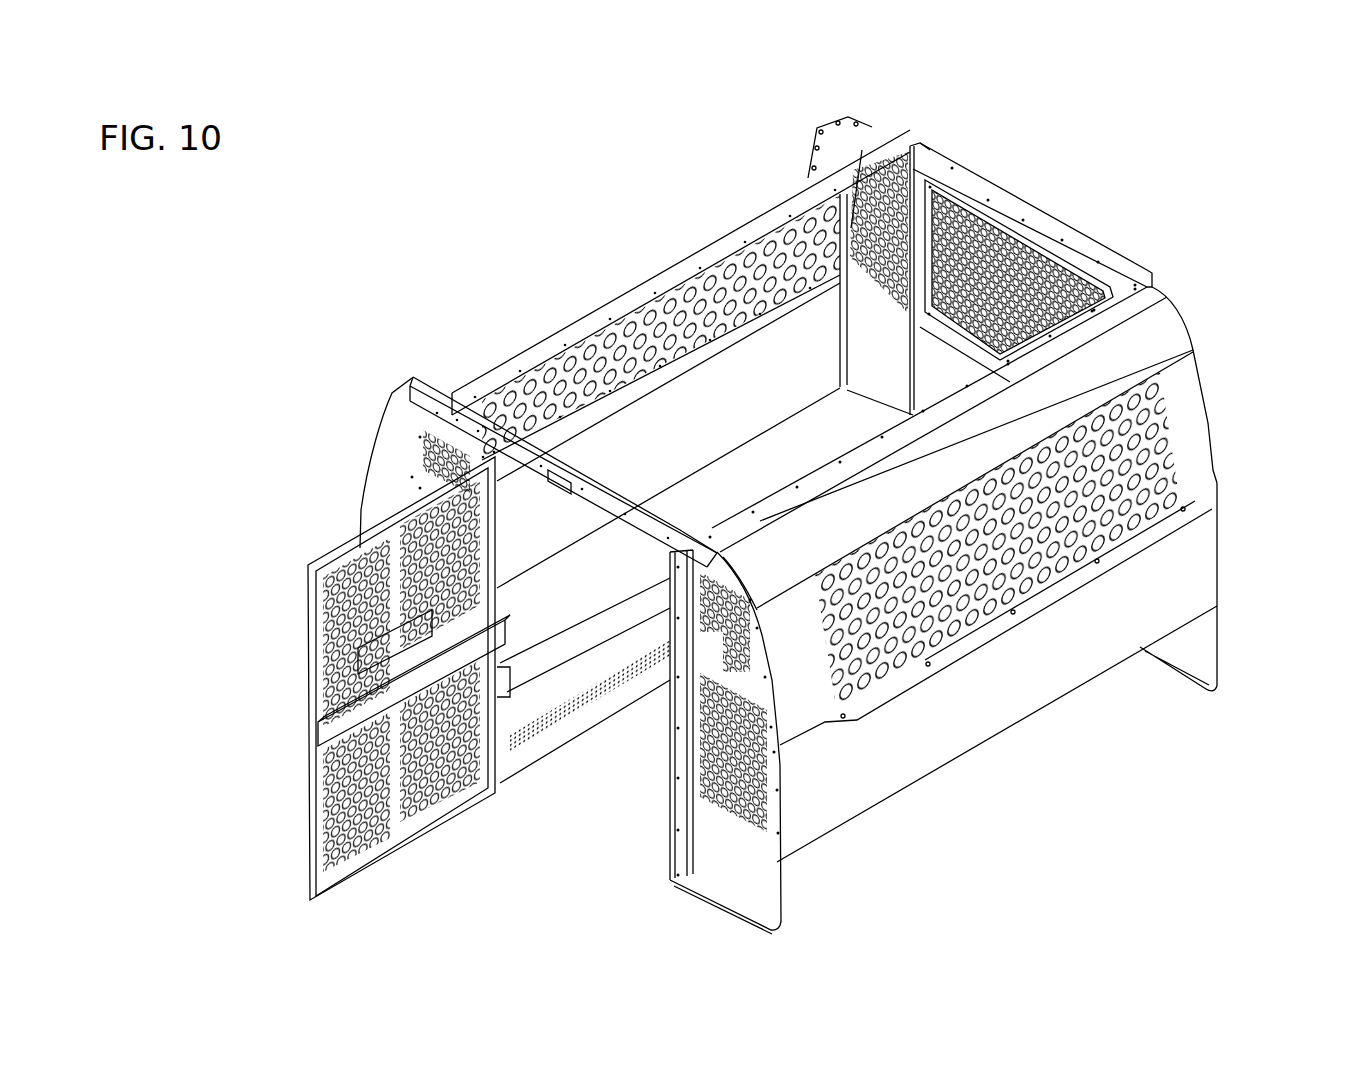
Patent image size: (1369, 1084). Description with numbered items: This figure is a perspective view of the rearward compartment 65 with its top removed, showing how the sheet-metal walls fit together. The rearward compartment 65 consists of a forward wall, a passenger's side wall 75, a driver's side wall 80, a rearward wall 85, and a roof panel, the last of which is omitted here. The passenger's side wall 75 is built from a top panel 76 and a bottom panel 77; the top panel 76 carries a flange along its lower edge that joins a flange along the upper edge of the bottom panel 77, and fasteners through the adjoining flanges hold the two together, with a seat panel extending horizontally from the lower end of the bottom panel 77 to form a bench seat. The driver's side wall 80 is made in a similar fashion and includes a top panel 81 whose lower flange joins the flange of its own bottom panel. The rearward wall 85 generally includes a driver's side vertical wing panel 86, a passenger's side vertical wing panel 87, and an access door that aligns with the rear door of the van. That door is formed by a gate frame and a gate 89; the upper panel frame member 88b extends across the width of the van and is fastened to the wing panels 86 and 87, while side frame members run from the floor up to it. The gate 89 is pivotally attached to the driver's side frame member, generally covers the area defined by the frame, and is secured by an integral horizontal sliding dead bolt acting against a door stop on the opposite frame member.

The rearward compartment 65 is at (630, 177).
The passenger's side wall 75 is at (1212, 456).
The top panel 76 is at (1205, 428).
The bottom panel 77 is at (1200, 564).
The driver's side wall 80 is at (528, 344).
The top panel 81 is at (603, 317).
The rearward wall 85 is at (365, 437).
The driver's side vertical wing panel 86 is at (375, 495).
The passenger's side vertical wing panel 87 is at (768, 904).
The upper panel frame member 88b is at (418, 402).
The gate 89 is at (325, 552).